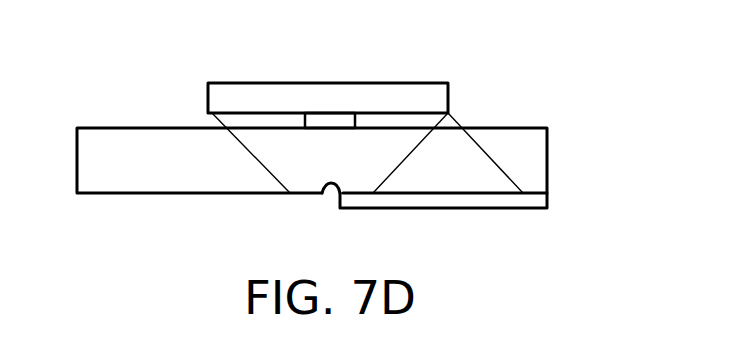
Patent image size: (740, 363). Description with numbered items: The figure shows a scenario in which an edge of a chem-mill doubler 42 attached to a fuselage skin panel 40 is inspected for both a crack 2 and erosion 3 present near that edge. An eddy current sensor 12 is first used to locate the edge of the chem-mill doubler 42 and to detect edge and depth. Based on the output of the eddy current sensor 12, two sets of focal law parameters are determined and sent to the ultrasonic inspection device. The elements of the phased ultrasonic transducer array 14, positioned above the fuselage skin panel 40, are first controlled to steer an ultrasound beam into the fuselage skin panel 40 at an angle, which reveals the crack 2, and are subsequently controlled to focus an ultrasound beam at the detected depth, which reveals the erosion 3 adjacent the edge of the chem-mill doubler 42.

The crack 2 is at (336, 183).
The erosion 3 is at (334, 197).
The eddy current sensor 12 is at (335, 120).
The phased ultrasonic transducer array 14 is at (435, 83).
The fuselage skin panel 40 is at (547, 158).
The chem-mill doubler 42 is at (491, 210).